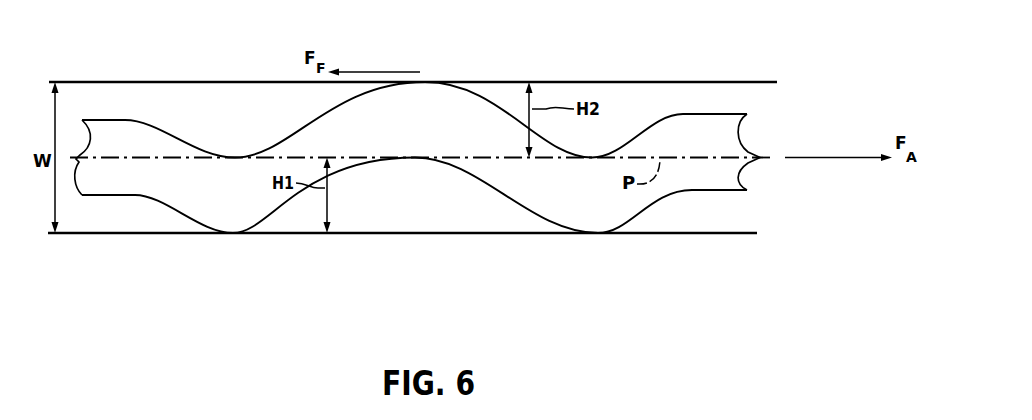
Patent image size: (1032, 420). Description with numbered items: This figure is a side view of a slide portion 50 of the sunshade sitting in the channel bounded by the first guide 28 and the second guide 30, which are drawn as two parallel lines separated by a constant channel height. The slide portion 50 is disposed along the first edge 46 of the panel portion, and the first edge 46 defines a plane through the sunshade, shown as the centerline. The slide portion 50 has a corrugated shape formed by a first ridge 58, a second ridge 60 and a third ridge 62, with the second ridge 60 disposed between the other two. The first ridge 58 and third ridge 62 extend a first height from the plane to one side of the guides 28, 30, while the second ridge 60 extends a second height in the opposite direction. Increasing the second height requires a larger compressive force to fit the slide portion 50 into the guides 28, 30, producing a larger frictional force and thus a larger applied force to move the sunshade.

The first guide 28 is at (412, 150).
The second guide 30 is at (195, 80).
The first edge 46 is at (705, 177).
The slide portion 50 is at (275, 122).
The first ridge 58 is at (235, 223).
The second ridge 60 is at (420, 97).
The third ridge 62 is at (598, 218).